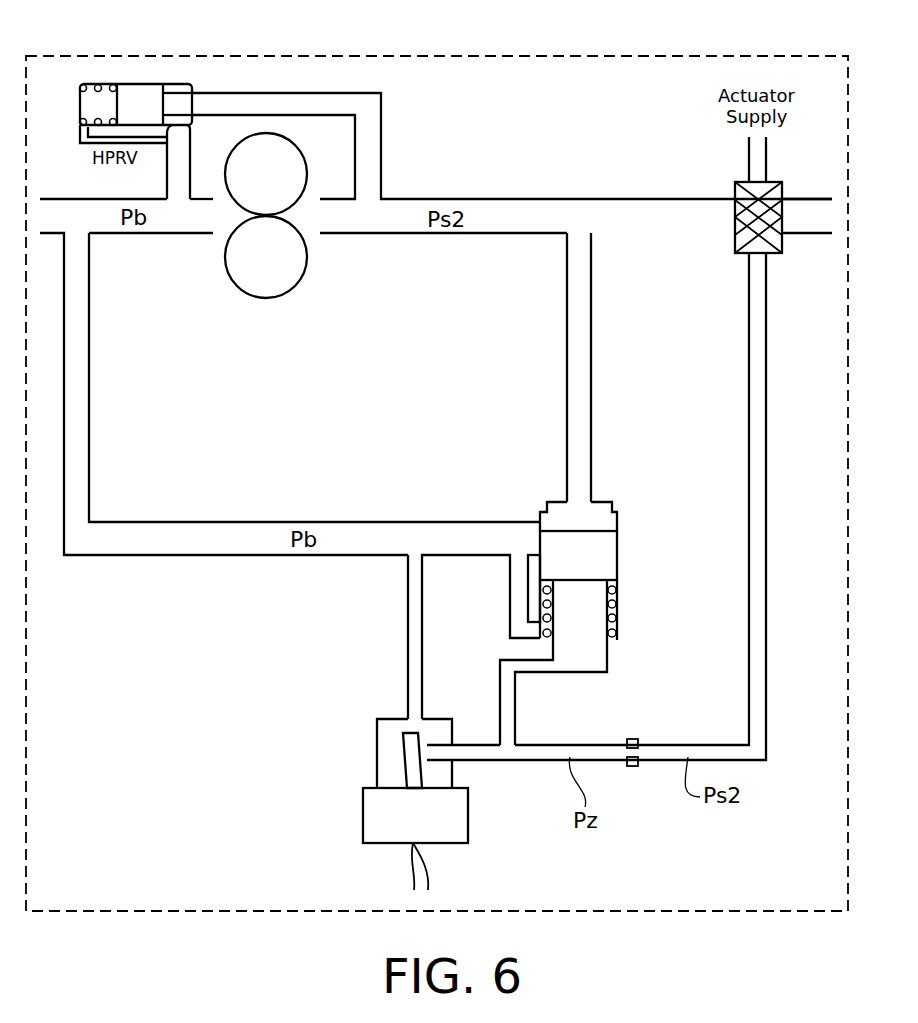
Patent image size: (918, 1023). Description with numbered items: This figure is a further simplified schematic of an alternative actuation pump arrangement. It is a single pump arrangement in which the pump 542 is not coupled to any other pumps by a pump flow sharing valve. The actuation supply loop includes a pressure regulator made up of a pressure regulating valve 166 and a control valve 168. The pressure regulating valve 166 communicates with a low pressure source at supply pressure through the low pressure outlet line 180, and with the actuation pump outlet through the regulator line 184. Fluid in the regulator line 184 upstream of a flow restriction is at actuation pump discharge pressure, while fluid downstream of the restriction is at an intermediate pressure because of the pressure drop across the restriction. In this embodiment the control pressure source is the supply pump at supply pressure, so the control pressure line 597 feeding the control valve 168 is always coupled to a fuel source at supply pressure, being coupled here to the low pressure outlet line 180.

The pump 542 is at (298, 143).
The pressure regulating valve 166 is at (656, 506).
The low pressure outlet line 180 is at (165, 532).
The control pressure line 597 is at (408, 602).
The regulator line 184 is at (747, 650).
The control valve 168 is at (328, 788).